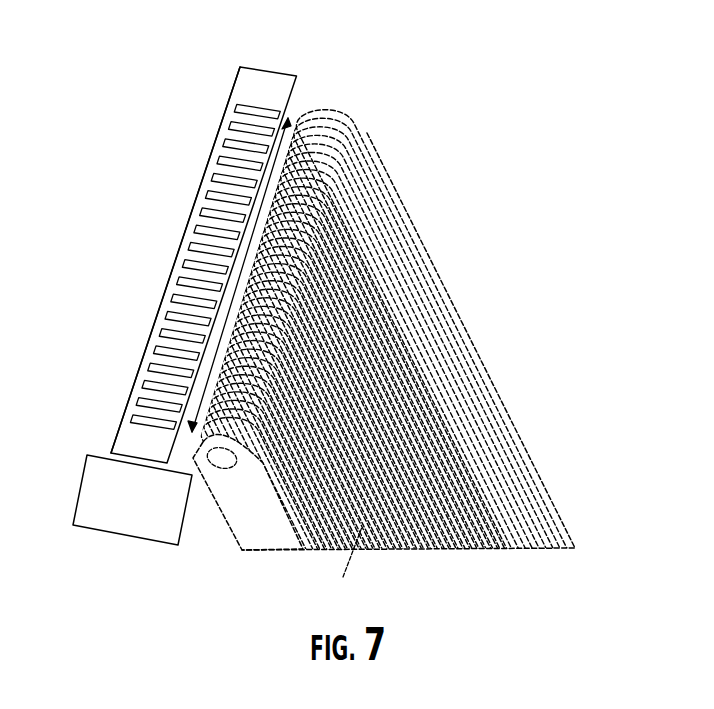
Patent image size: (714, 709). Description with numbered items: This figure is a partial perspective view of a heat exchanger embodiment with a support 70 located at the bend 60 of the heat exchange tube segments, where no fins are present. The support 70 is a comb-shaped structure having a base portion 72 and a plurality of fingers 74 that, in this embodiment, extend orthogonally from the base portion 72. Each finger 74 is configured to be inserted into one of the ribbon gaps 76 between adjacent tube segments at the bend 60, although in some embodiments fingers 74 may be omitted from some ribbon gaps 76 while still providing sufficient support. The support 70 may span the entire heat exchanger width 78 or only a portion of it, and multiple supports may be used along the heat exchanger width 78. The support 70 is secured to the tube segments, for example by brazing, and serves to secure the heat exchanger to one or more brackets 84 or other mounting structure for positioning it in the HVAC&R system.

The bend 60 is at (343, 112).
The support 70 is at (245, 78).
The base portion 72 is at (207, 163).
The fingers 74 is at (158, 320).
The ribbon gaps 76 is at (335, 145).
The heat exchanger width 78 is at (183, 405).
The brackets 84 is at (112, 512).